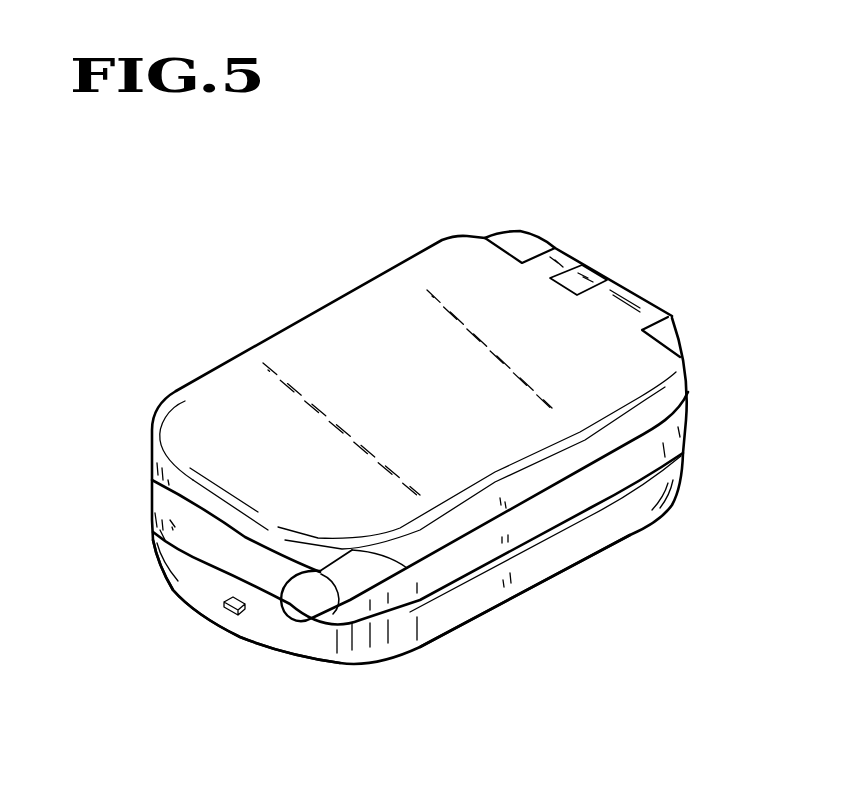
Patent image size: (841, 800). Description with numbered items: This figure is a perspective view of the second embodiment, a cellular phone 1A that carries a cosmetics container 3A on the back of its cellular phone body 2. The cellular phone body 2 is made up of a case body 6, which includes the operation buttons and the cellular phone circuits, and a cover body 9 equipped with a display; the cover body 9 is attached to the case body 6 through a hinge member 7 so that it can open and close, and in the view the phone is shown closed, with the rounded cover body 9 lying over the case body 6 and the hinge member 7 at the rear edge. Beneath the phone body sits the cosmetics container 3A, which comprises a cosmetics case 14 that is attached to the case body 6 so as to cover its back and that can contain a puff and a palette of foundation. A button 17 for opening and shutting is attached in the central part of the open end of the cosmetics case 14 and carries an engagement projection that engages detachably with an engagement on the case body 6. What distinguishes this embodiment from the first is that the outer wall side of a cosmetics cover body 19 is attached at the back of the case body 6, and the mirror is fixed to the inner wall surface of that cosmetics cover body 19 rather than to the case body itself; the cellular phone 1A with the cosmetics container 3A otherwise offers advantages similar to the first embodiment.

The cellular phone 1A is at (242, 231).
The cellular phone body 2 is at (224, 357).
The cosmetics container 3A is at (477, 617).
The case body 6 is at (655, 281).
The hinge member 7 is at (557, 254).
The cover body 9 is at (183, 402).
The cosmetics case 14 is at (394, 652).
The button 17 is at (229, 613).
The cosmetics cover body 19 is at (550, 537).